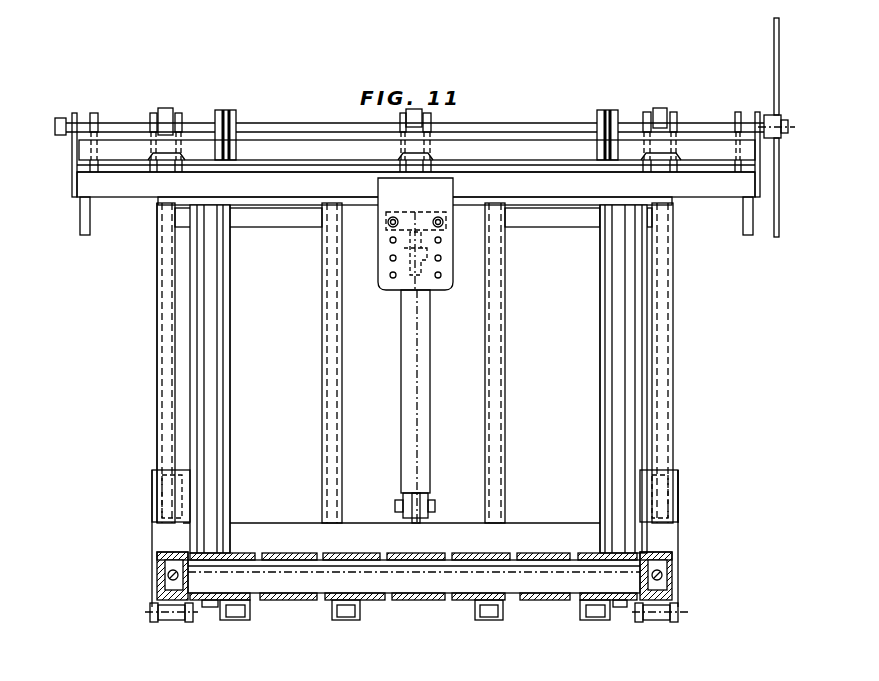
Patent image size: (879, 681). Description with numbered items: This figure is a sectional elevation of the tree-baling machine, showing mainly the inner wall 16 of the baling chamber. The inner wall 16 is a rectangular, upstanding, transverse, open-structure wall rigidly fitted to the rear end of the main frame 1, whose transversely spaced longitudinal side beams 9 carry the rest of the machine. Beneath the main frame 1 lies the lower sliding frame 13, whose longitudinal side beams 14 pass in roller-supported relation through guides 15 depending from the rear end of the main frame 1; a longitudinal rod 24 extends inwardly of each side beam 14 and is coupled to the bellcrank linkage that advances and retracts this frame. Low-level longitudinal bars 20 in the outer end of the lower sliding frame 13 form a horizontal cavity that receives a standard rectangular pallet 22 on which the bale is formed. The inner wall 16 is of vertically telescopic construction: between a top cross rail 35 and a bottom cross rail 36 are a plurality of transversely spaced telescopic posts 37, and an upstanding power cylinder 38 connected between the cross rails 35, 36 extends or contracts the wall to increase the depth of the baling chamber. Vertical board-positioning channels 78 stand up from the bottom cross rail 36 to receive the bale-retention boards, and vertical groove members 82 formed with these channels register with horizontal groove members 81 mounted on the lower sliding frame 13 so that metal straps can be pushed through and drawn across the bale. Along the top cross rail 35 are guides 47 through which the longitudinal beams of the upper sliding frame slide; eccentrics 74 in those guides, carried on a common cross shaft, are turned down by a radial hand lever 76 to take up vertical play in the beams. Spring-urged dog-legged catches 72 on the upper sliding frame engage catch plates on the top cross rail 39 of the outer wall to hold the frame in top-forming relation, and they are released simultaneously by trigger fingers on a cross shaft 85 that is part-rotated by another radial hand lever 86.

The main frame 1 is at (683, 467).
The side beam 9 is at (162, 488).
The lower sliding frame 13 is at (157, 573).
The side beam 14 is at (158, 552).
The guide 15 is at (152, 522).
The inner wall 16 is at (157, 403).
The longitudinal bar 20 is at (238, 618).
The pallet 22 is at (280, 555).
The longitudinal rod 24 is at (170, 580).
The top cross rail 35 is at (550, 173).
The bottom cross rail 36 is at (522, 532).
The telescopic post 37 is at (160, 345).
The power cylinder 38 is at (423, 360).
The top cross rail 39 is at (132, 187).
The guide 47 is at (152, 113).
The dog-legged catch 72 is at (235, 108).
The eccentric 74 is at (165, 108).
The hand lever 76 is at (779, 38).
The positioning channel 78 is at (228, 410).
The horizontal groove member 81 is at (208, 608).
The vertical groove member 82 is at (213, 308).
The cross shaft 85 is at (503, 130).
The hand lever 86 is at (779, 222).